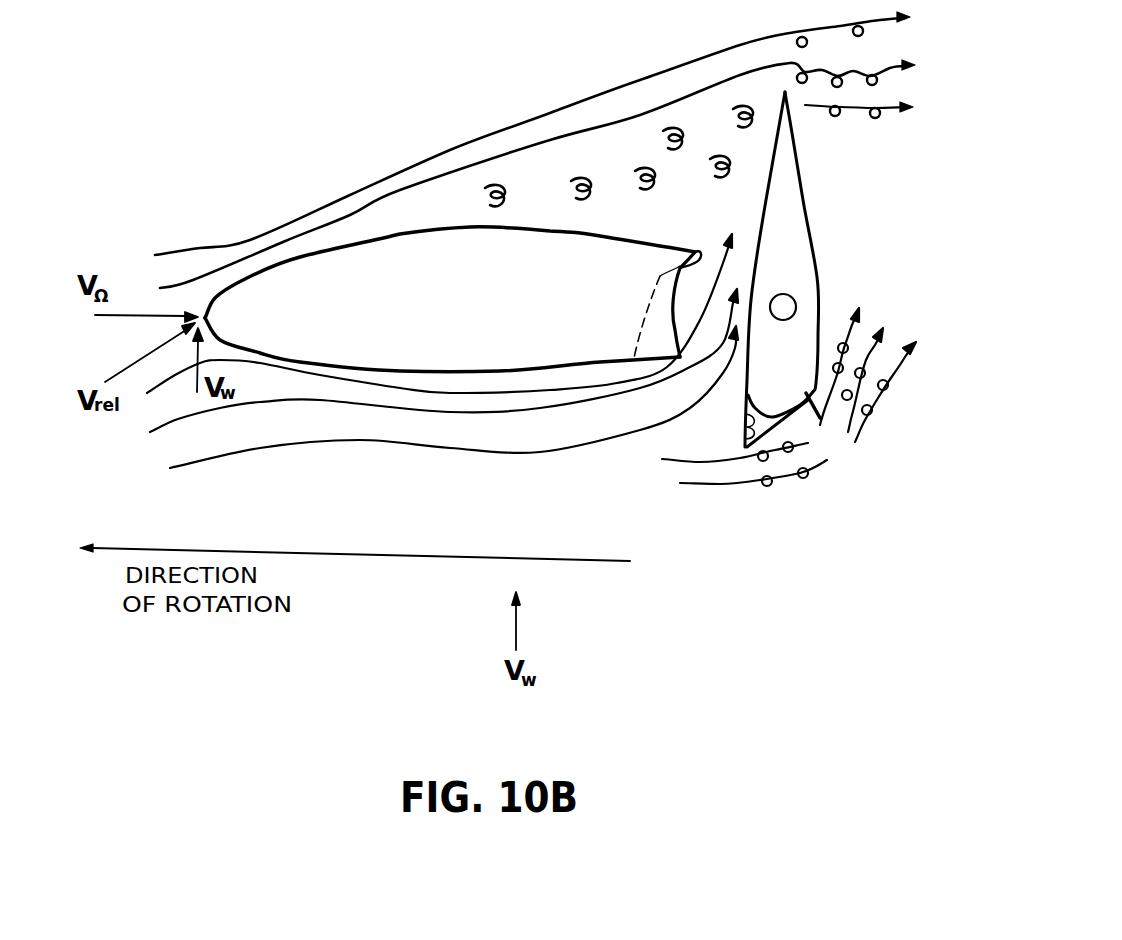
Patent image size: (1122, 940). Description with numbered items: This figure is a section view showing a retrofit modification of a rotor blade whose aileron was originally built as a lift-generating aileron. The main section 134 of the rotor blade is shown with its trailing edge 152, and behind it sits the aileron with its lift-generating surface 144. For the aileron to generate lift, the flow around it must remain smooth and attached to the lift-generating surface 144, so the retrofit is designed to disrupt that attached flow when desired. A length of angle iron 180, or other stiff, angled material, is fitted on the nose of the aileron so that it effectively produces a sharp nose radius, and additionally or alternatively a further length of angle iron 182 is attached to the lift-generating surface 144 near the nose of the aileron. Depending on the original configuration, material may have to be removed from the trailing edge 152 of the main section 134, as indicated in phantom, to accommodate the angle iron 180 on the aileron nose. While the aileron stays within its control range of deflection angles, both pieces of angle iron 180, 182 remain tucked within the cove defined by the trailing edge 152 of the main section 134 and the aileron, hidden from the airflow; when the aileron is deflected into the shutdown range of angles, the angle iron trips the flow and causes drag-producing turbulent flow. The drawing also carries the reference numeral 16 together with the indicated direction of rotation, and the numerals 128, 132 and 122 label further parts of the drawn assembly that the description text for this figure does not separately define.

The main section 134 is at (503, 308).
The trailing edge flap 128 is at (602, 230).
The trailing edge 152 is at (687, 292).
The flow streamlines 122 is at (560, 375).
The vane 132 is at (800, 272).
The lift-generating surface 144 is at (820, 275).
The angle iron 180 is at (743, 426).
The angle iron 182 is at (814, 405).
The rotor direction of rotation 16 is at (400, 560).